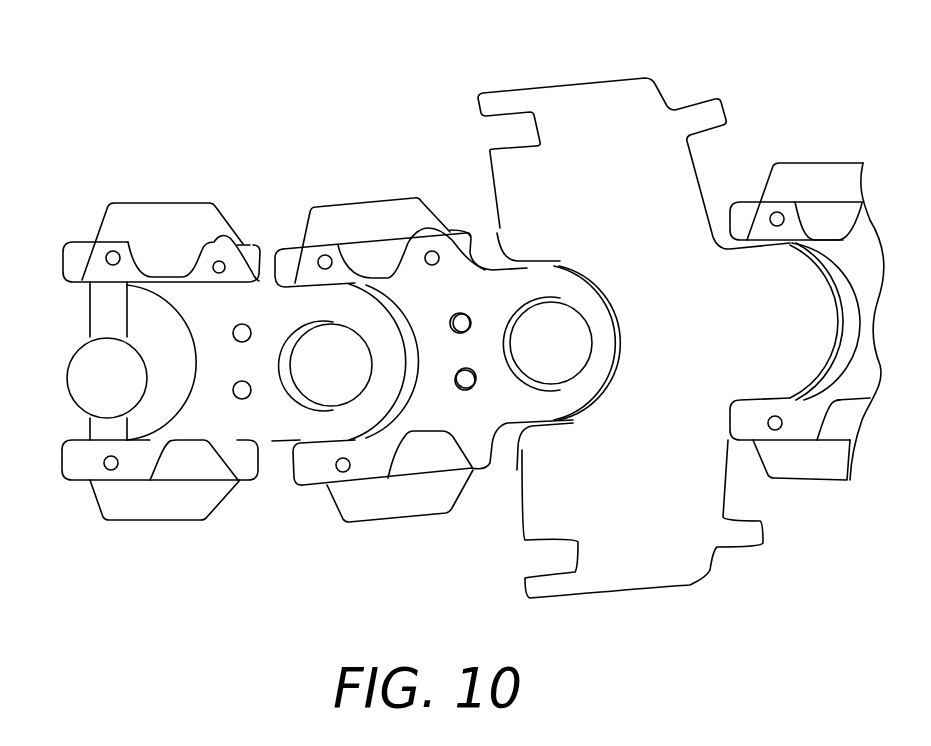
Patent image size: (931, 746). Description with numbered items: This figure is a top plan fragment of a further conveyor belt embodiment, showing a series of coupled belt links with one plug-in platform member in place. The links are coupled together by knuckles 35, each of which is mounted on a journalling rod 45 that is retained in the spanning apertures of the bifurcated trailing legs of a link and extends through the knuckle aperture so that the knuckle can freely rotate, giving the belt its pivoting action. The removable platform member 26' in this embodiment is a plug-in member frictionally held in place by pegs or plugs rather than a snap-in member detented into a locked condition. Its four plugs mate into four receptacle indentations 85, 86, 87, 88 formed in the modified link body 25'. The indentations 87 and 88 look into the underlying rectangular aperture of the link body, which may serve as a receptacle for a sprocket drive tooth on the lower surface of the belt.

The removable platform member 26' is at (669, 311).
The modified link body 25' is at (141, 386).
The knuckle 35 is at (98, 373).
The journalling rod 45 is at (108, 313).
The receptacle indentation 85 is at (117, 468).
The receptacle indentation 86 is at (117, 253).
The receptacle indentation 87 is at (246, 398).
The receptacle indentation 88 is at (245, 325).